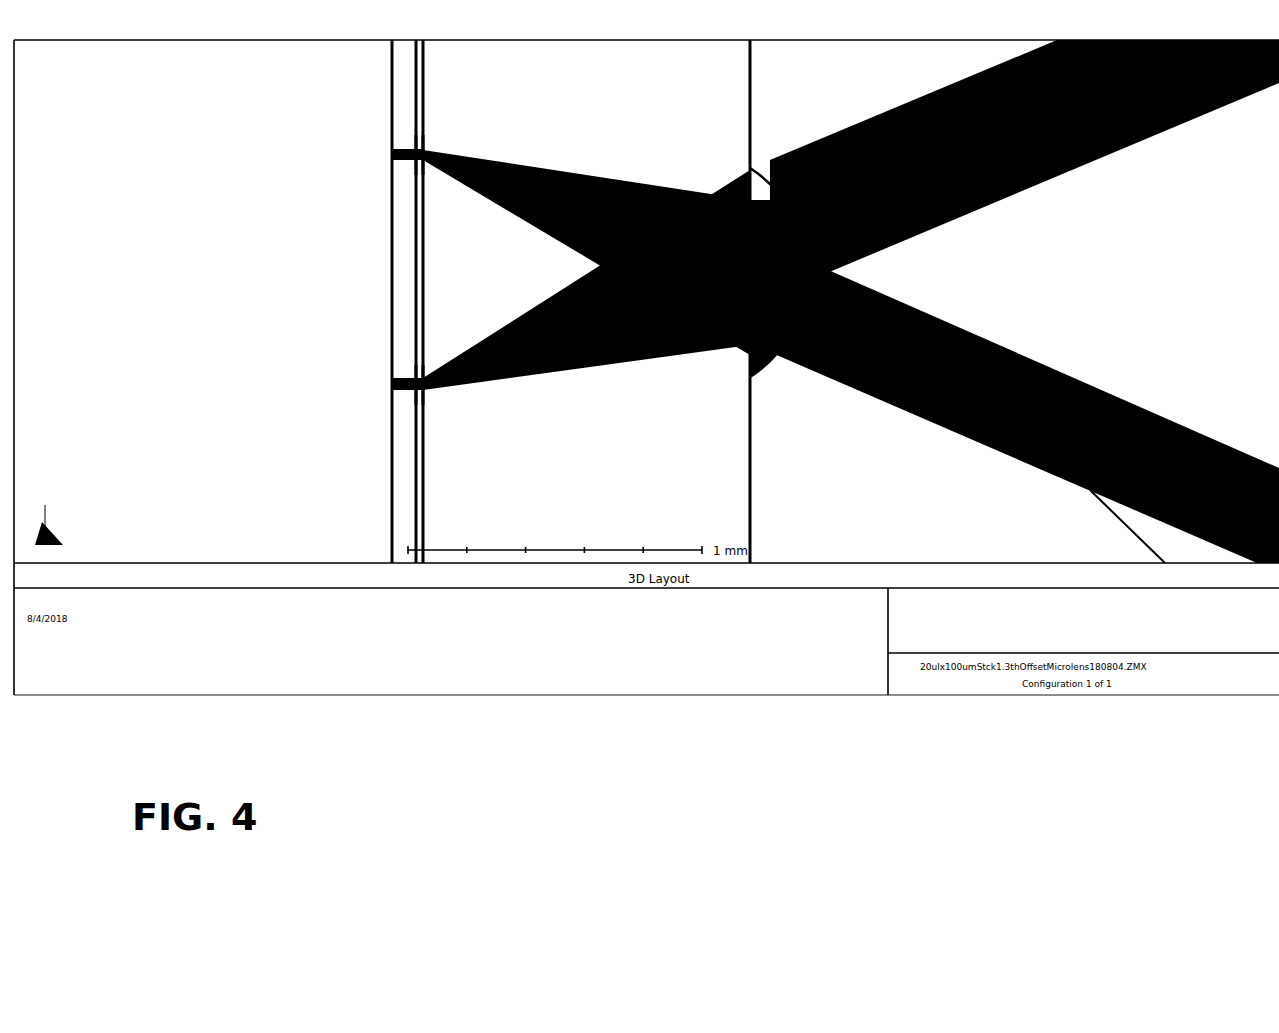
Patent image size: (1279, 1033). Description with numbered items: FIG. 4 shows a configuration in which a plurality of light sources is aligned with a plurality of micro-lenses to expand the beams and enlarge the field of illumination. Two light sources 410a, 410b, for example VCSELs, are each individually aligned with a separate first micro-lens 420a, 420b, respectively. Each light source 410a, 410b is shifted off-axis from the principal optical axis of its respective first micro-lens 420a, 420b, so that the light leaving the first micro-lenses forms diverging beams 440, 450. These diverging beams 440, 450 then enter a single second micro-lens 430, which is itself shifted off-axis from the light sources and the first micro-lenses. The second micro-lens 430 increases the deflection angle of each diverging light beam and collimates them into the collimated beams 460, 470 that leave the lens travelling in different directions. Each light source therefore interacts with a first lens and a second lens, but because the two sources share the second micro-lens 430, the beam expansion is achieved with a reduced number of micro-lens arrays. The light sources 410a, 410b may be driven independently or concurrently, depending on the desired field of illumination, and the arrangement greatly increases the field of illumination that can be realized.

The light source 410a is at (368, 156).
The light source 410b is at (371, 391).
The first micro-lens 420a is at (438, 150).
The first micro-lens 420b is at (440, 418).
The second micro-lens 430 is at (781, 165).
The diverging beam 440 is at (586, 252).
The diverging beam 450 is at (586, 282).
The collimated beam 460 is at (1024, 168).
The collimated beam 470 is at (1019, 401).